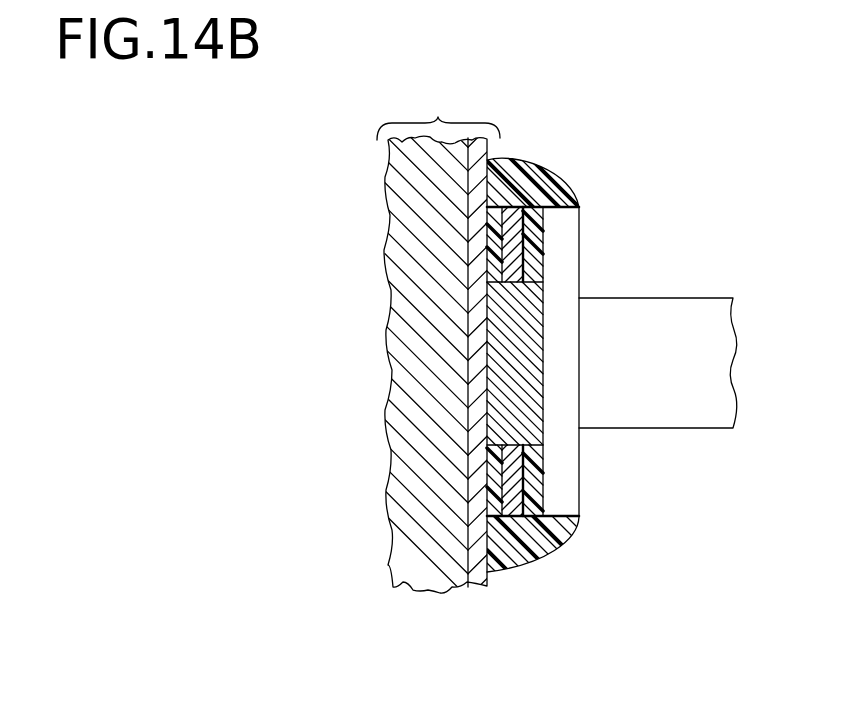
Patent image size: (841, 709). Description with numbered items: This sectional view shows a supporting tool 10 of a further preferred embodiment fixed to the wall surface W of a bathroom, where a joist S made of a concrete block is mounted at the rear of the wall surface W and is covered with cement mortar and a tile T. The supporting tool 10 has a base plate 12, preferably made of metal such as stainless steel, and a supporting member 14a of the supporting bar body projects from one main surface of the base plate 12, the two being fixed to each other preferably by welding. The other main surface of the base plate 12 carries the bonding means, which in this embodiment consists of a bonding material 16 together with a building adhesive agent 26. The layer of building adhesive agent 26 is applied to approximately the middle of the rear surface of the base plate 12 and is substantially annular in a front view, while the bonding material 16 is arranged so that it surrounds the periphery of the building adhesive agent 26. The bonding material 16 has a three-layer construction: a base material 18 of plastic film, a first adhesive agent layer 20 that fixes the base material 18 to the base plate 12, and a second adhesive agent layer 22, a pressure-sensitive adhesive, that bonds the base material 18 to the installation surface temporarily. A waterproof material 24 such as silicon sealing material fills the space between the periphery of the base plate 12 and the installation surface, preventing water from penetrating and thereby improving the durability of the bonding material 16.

The supporting tool 10 is at (600, 371).
The base plate 12 is at (563, 240).
The supporting member 14a is at (703, 298).
The bonding material 16 is at (562, 268).
The base material 18 is at (548, 187).
The first adhesive agent layer 20 is at (540, 222).
The second adhesive agent layer 22 is at (537, 183).
The waterproof material 24 is at (515, 173).
The building adhesive agent 26 is at (530, 375).
The joist S is at (415, 583).
The tile T is at (478, 583).
The wall surface W is at (438, 111).